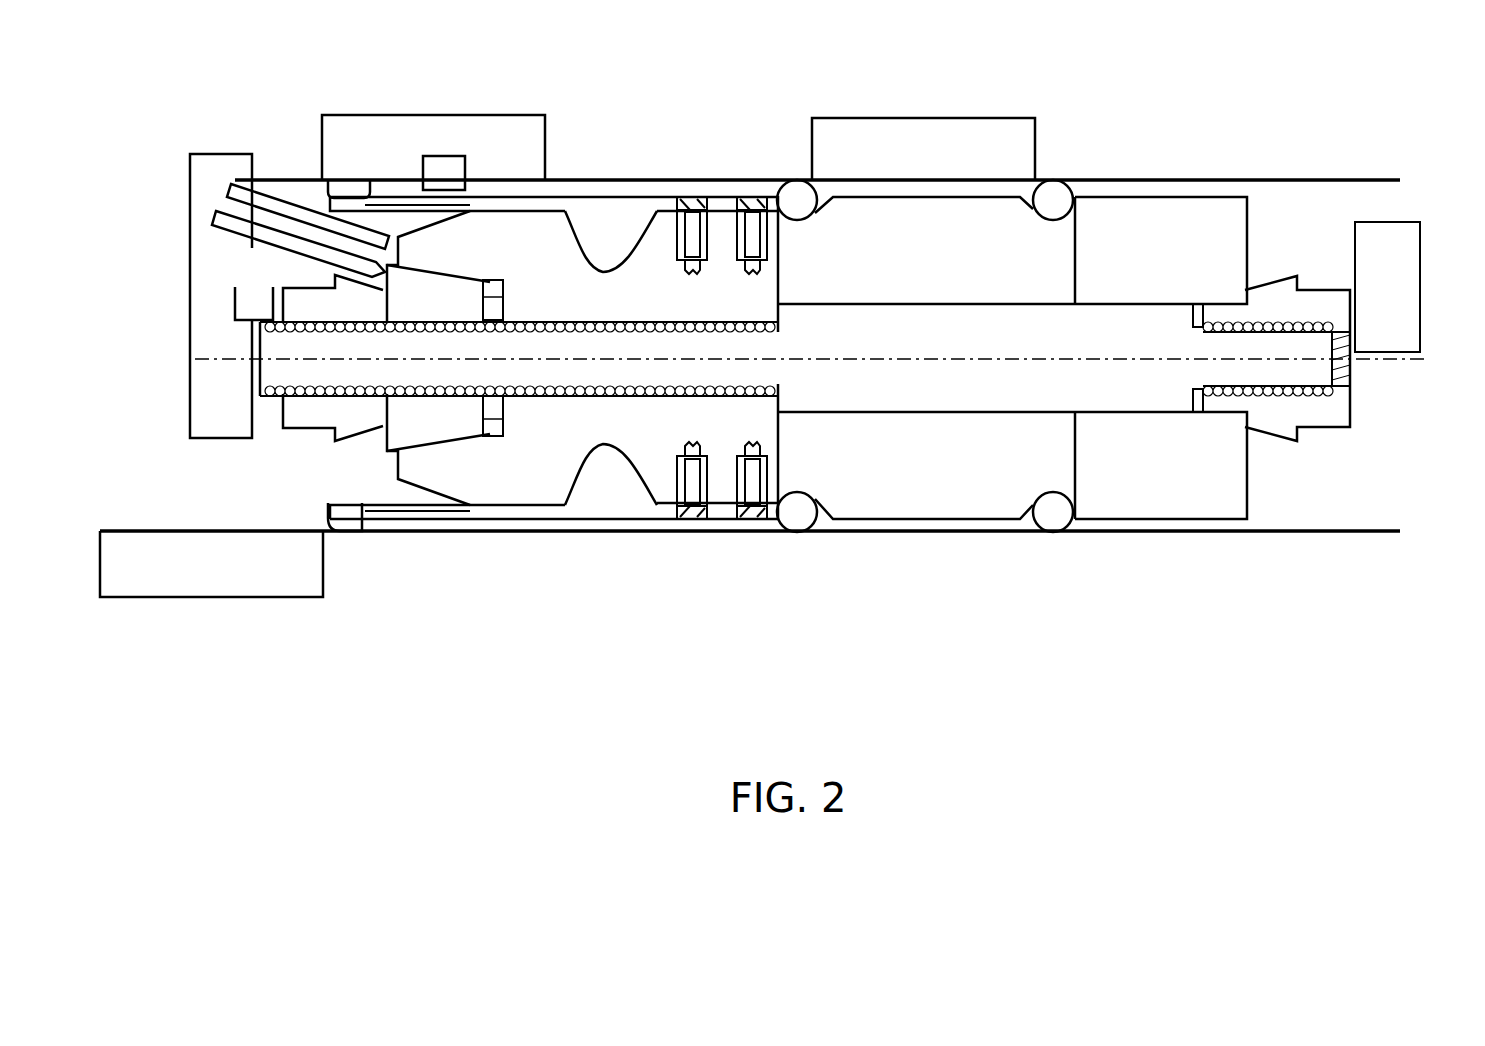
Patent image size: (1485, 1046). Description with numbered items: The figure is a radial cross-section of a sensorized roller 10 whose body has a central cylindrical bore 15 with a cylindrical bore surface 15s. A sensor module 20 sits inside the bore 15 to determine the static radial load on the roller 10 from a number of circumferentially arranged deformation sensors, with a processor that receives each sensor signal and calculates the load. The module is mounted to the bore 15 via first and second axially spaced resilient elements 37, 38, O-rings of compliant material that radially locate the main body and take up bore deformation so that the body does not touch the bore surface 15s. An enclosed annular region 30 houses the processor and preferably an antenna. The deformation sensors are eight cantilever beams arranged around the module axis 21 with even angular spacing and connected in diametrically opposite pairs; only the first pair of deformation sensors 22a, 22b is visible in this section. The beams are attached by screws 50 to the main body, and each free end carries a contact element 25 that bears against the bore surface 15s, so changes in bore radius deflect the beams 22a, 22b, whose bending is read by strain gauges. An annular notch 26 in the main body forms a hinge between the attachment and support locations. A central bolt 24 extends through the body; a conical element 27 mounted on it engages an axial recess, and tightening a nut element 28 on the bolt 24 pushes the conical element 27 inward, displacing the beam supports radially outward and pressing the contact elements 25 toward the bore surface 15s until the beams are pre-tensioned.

The roller 10 is at (1190, 650).
The bore 15 is at (276, 481).
The bore surface 15s is at (299, 181).
The sensor module 20 is at (1300, 474).
The axis 21 is at (1370, 363).
The deformation sensor 22a is at (412, 190).
The deformation sensor 22b is at (410, 532).
The central bolt 24 is at (1153, 337).
The contact element 25 is at (330, 188).
The annular notch 26 is at (603, 236).
The conical element 27 is at (450, 412).
The nut element 28 is at (298, 399).
The enclosed annular region 30 is at (940, 483).
The first resilient element 37 is at (790, 533).
The second resilient element 38 is at (1052, 533).
The screws 50 is at (693, 222).